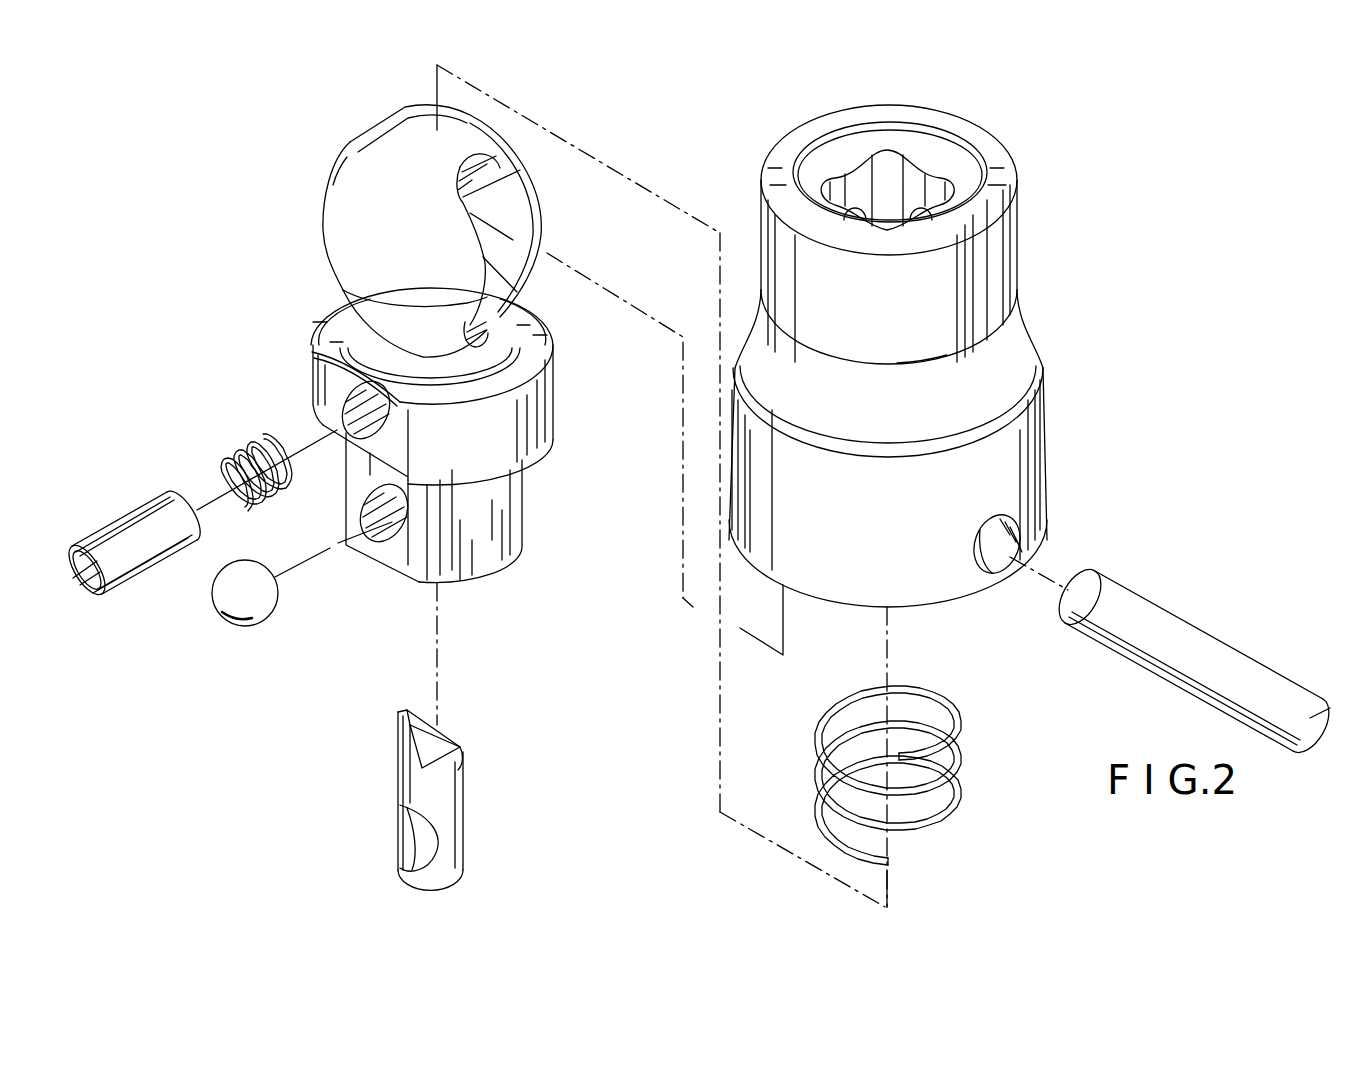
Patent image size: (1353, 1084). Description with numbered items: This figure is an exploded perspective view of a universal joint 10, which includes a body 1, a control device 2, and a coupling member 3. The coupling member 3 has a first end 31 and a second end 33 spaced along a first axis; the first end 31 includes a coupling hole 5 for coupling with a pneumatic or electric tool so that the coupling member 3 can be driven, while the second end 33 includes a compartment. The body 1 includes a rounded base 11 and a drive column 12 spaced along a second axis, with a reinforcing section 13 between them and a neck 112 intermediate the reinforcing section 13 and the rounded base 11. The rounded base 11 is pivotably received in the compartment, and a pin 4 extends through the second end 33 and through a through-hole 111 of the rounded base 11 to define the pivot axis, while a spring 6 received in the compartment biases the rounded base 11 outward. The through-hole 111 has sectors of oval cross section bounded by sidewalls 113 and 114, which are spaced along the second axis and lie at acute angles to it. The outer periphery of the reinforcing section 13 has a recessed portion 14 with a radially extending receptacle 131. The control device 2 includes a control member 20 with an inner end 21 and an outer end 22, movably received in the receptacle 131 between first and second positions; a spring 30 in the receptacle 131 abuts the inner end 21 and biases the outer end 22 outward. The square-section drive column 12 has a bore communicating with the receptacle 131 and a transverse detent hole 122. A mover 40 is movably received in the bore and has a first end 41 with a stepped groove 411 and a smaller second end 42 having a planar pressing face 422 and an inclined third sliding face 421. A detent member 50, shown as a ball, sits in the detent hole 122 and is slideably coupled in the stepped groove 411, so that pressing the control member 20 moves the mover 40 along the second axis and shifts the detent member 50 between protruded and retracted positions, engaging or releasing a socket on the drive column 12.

The body 1 is at (600, 573).
The control device 2 is at (140, 760).
The universal joint 10 is at (1140, 298).
The rounded base 11 is at (530, 188).
The through-hole 111 is at (507, 223).
The neck 112 is at (493, 348).
The first sidewall 113 is at (490, 170).
The second sidewall 114 is at (493, 313).
The drive column 12 is at (512, 498).
The detent hole 122 is at (388, 525).
The reinforcing section 13 is at (538, 402).
The receptacle 131 is at (358, 408).
The recessed portion 14 is at (323, 375).
The control member 20 is at (130, 560).
The inner end 21 is at (182, 492).
The outer end 22 is at (88, 583).
The spring 30 is at (243, 455).
The detent member 50 is at (253, 608).
The mover 40 is at (335, 824).
The first end 41 is at (412, 798).
The stepped groove 411 is at (405, 847).
The second end 42 is at (430, 732).
The third sliding face 421 is at (437, 725).
The pressing face 422 is at (403, 713).
The coupling member 3 is at (1003, 270).
The first end 31 is at (977, 242).
The second end 33 is at (1035, 530).
The pin 4 is at (1150, 612).
The coupling hole 5 is at (893, 212).
The spring 6 is at (953, 763).